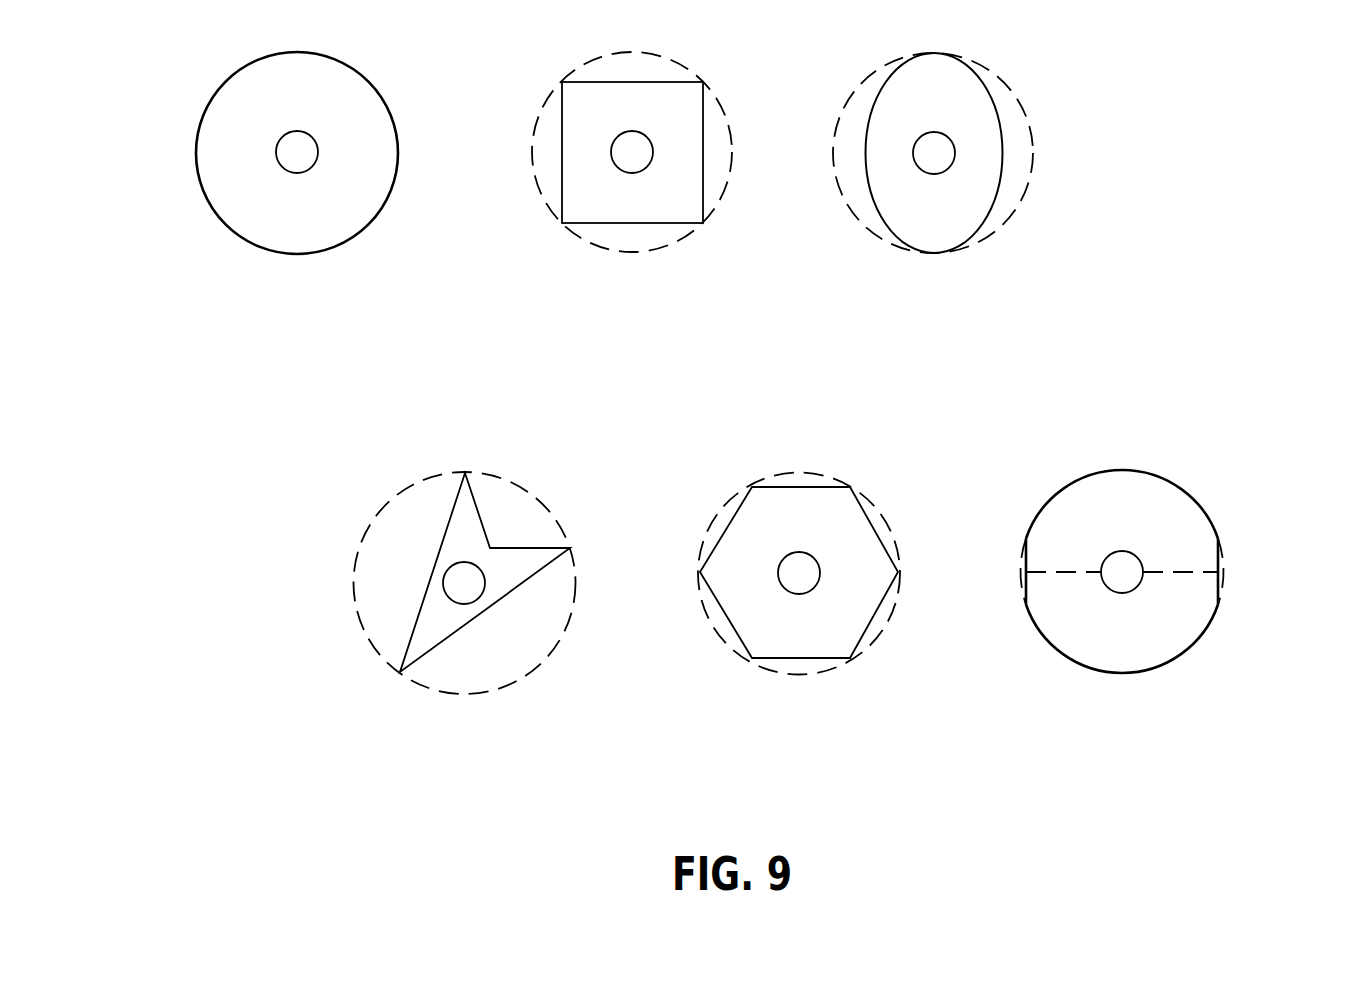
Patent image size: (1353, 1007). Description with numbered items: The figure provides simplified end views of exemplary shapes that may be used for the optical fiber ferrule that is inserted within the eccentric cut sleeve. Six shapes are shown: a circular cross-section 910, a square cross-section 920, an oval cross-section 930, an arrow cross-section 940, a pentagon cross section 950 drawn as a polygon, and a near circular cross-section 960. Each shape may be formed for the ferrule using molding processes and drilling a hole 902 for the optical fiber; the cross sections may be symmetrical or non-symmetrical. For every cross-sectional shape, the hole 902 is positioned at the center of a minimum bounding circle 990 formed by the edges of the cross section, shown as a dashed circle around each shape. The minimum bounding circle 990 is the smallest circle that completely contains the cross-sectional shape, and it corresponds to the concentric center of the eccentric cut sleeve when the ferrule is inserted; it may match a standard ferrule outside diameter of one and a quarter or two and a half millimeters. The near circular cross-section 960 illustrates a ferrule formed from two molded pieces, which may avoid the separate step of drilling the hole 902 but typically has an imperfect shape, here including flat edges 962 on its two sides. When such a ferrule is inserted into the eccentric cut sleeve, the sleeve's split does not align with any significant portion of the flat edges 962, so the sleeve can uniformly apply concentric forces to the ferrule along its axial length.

The hole 902 is at (296, 161).
The circular cross-section 910 is at (297, 272).
The square cross-section 920 is at (633, 244).
The oval cross-section 930 is at (930, 277).
The arrow cross-section 940 is at (458, 671).
The pentagon cross section 950 is at (798, 702).
The near circular cross-section 960 is at (1122, 702).
The flat edges 962 is at (1007, 540).
The minimum bounding circle 990 is at (184, 104).